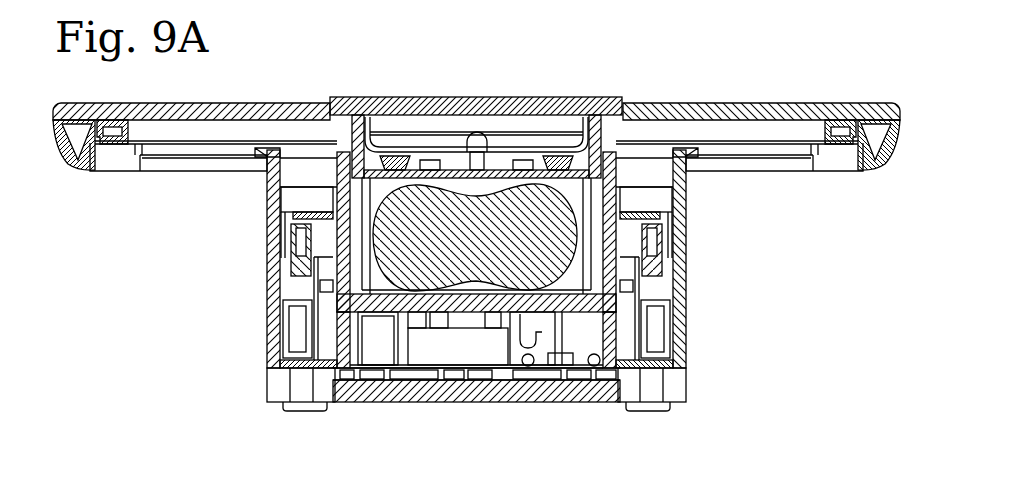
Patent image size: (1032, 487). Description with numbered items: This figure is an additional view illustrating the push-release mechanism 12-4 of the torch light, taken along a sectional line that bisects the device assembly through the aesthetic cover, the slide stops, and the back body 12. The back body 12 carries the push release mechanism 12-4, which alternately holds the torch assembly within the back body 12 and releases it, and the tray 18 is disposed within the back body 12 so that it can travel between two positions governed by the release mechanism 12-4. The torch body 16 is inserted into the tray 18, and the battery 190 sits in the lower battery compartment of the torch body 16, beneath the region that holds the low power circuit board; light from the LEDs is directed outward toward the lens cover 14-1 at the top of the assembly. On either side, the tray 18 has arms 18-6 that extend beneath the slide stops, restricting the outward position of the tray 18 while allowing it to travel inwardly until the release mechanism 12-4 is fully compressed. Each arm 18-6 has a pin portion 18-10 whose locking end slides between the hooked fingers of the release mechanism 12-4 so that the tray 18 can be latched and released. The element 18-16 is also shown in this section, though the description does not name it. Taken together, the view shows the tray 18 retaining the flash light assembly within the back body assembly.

The back body 12 is at (423, 396).
The push release mechanism 12-4 is at (302, 284).
The lens cover 14-1 is at (469, 97).
The torch body 16 is at (492, 298).
The tray 18 is at (560, 328).
The arm 18-6 is at (291, 210).
The pin portion 18-10 is at (302, 236).
The housing flange 18-16 is at (664, 213).
The battery 190 is at (432, 215).